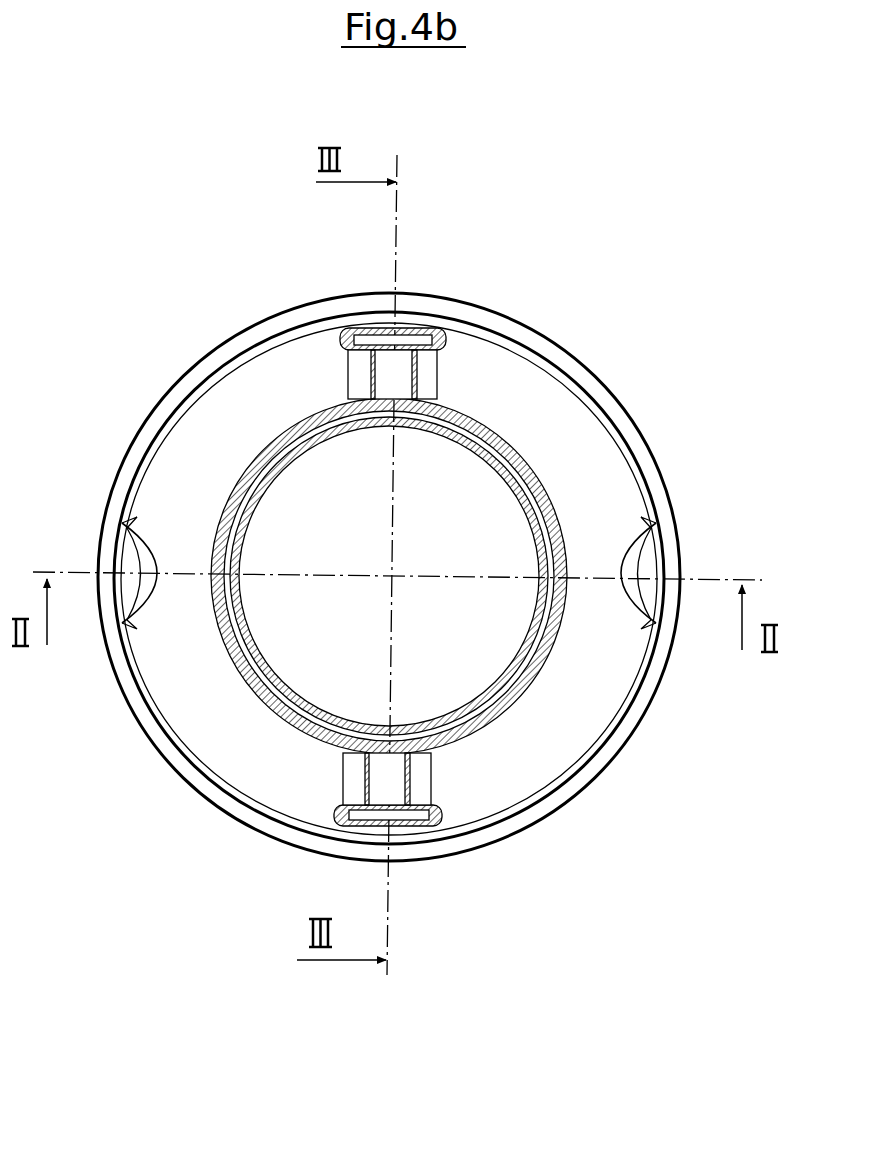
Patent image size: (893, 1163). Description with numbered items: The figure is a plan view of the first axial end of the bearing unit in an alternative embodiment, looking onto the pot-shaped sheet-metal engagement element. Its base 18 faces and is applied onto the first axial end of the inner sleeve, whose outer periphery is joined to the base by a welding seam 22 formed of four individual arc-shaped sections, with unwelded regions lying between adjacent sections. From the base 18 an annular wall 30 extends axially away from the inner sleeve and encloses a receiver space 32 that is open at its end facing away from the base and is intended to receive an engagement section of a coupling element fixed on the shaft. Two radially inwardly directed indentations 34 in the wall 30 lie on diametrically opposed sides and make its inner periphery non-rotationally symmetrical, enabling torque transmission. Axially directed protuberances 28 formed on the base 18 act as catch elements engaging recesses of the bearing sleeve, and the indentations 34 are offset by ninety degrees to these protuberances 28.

The base 18 is at (588, 468).
The welding seam 22 is at (507, 707).
The protuberances 28 is at (413, 378).
The wall 30 is at (637, 710).
The receiver space 32 is at (249, 458).
The indentations 34 is at (130, 655).